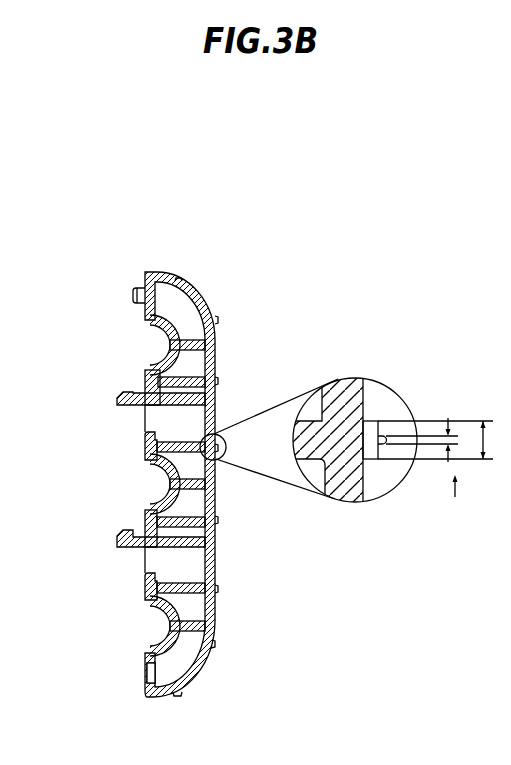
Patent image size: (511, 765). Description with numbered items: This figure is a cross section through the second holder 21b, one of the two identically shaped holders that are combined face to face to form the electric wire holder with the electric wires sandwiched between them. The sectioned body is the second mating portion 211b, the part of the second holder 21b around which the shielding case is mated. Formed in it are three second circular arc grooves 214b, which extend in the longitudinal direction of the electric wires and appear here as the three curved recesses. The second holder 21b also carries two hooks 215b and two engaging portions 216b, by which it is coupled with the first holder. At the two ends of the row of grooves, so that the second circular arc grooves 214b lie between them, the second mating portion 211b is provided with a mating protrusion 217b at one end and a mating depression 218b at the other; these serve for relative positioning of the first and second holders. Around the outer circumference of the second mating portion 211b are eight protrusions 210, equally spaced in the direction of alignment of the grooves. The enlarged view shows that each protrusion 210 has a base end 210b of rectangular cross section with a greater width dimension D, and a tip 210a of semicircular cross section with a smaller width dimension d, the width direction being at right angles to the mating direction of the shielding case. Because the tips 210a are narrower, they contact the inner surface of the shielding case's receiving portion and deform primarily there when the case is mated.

The second holder 21b is at (126, 212).
The second mating portion 211b is at (188, 292).
The mating protrusion 217b is at (134, 293).
The second circular arc grooves 214b is at (176, 337).
The hooks 215b is at (122, 392).
The engaging portions 216b is at (146, 436).
The mating depression 218b is at (150, 673).
The protrusions 210 is at (212, 643).
The tips 210a is at (382, 443).
The base ends 210b is at (370, 450).